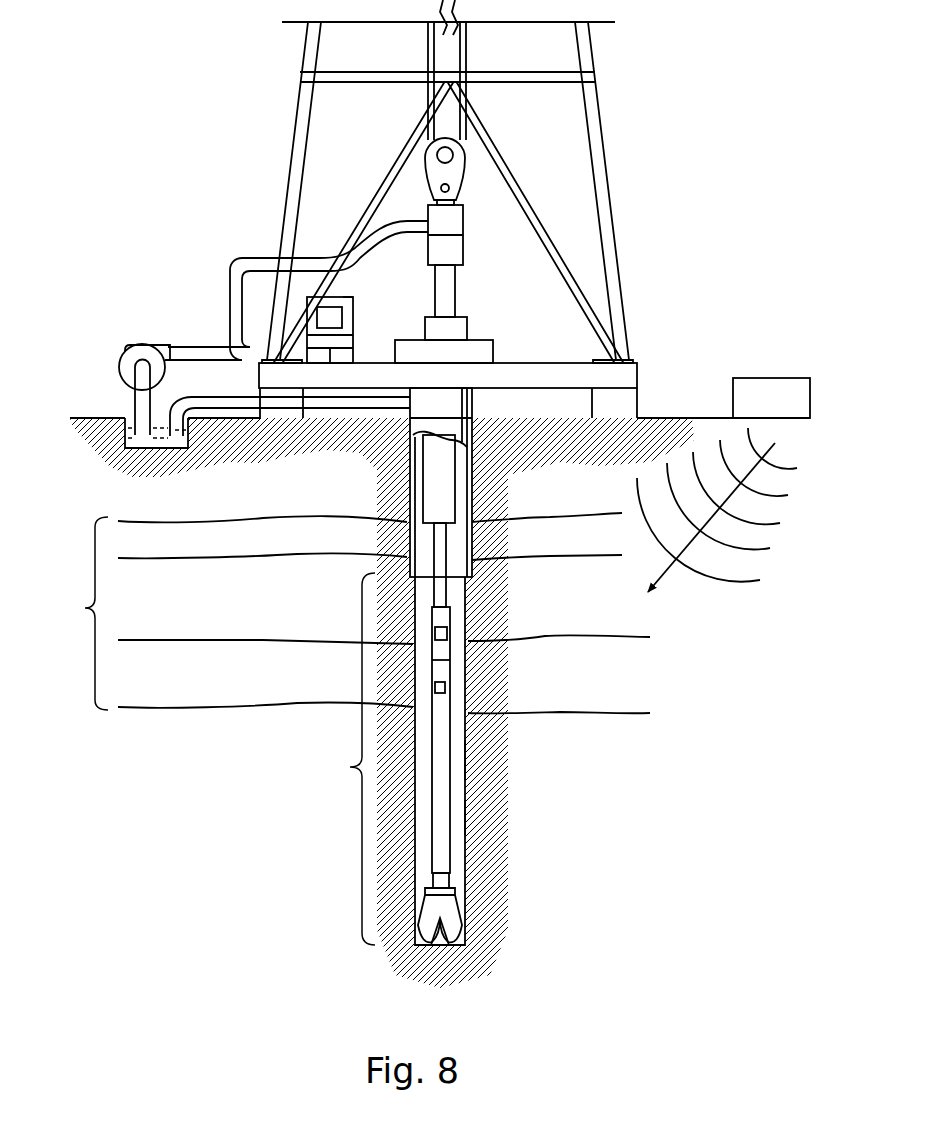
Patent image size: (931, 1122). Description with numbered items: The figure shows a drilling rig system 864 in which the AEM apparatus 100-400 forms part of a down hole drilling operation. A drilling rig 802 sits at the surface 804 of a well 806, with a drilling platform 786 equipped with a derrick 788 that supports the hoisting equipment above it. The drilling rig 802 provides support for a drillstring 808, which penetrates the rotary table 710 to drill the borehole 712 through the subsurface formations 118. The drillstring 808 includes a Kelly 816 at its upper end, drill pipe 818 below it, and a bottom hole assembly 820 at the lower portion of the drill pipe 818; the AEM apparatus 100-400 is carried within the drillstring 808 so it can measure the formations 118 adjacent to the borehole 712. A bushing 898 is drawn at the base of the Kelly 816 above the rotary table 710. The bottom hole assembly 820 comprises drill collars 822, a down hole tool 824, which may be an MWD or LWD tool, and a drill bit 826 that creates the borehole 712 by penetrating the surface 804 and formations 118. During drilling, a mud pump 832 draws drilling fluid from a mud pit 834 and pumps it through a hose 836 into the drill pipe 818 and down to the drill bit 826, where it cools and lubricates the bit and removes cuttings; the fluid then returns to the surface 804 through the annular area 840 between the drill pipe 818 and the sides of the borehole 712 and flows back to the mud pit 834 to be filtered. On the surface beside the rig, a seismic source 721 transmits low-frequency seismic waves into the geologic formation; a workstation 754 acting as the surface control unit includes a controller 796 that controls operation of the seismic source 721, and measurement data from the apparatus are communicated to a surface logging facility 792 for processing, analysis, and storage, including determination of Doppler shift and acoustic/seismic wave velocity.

The drilling rig system 864 is at (192, 102).
The derrick 788 is at (595, 98).
The drilling rig 802 is at (615, 182).
The hose 836 is at (242, 262).
The mud pump 832 is at (150, 345).
The mud pit 834 is at (143, 448).
The surface logging facility 792 is at (343, 292).
The workstation 754 is at (355, 308).
The controller 796 is at (345, 317).
The rotary table 710 is at (410, 339).
The Kelly 816 is at (456, 285).
The kelly bushing 898 is at (467, 328).
The drilling platform 786 is at (638, 365).
The surface 804 is at (647, 418).
The seismic source 721 is at (773, 378).
The well 806 is at (477, 415).
The bottom hole assembly 820 is at (385, 759).
The drillstring 808 is at (453, 763).
The borehole 712 is at (466, 832).
The subsurface geological formations 118 is at (347, 613).
The drill collars 822 is at (455, 487).
The drill pipe 818 is at (440, 555).
The annular area 840 is at (458, 612).
The AEM apparatus 100-400 is at (447, 687).
The down hole tool 824 is at (440, 858).
The drill bit 826 is at (447, 908).